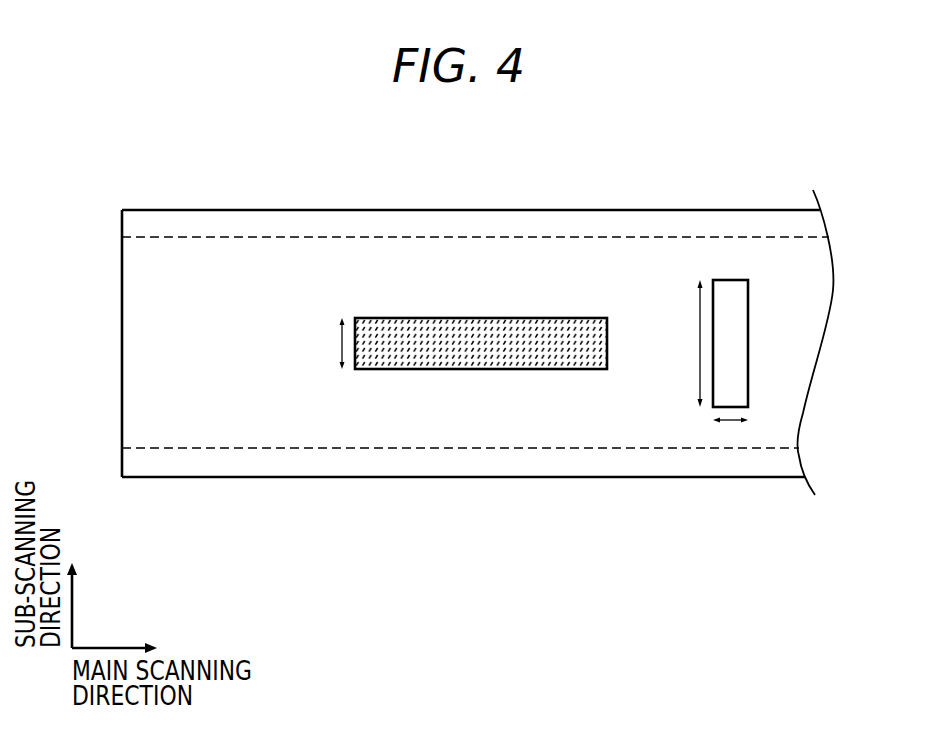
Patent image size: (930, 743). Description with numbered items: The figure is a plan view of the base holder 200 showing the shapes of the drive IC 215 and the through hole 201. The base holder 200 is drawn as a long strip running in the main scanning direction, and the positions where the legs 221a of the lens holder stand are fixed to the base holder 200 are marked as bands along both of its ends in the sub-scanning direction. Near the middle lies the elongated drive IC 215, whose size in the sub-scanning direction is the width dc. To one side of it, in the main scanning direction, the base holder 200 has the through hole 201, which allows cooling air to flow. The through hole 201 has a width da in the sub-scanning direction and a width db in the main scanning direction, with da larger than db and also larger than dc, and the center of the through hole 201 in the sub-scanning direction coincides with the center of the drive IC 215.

The base holder 200 is at (205, 210).
The through hole 201 is at (731, 292).
The drive IC 215 is at (485, 369).
The legs 221a is at (120, 210).
The width of the through hole in the sub-scanning direction da is at (686, 343).
The width of the through hole in the main scanning direction db is at (730, 434).
The width of the drive IC in the sub-scanning direction dc is at (329, 343).